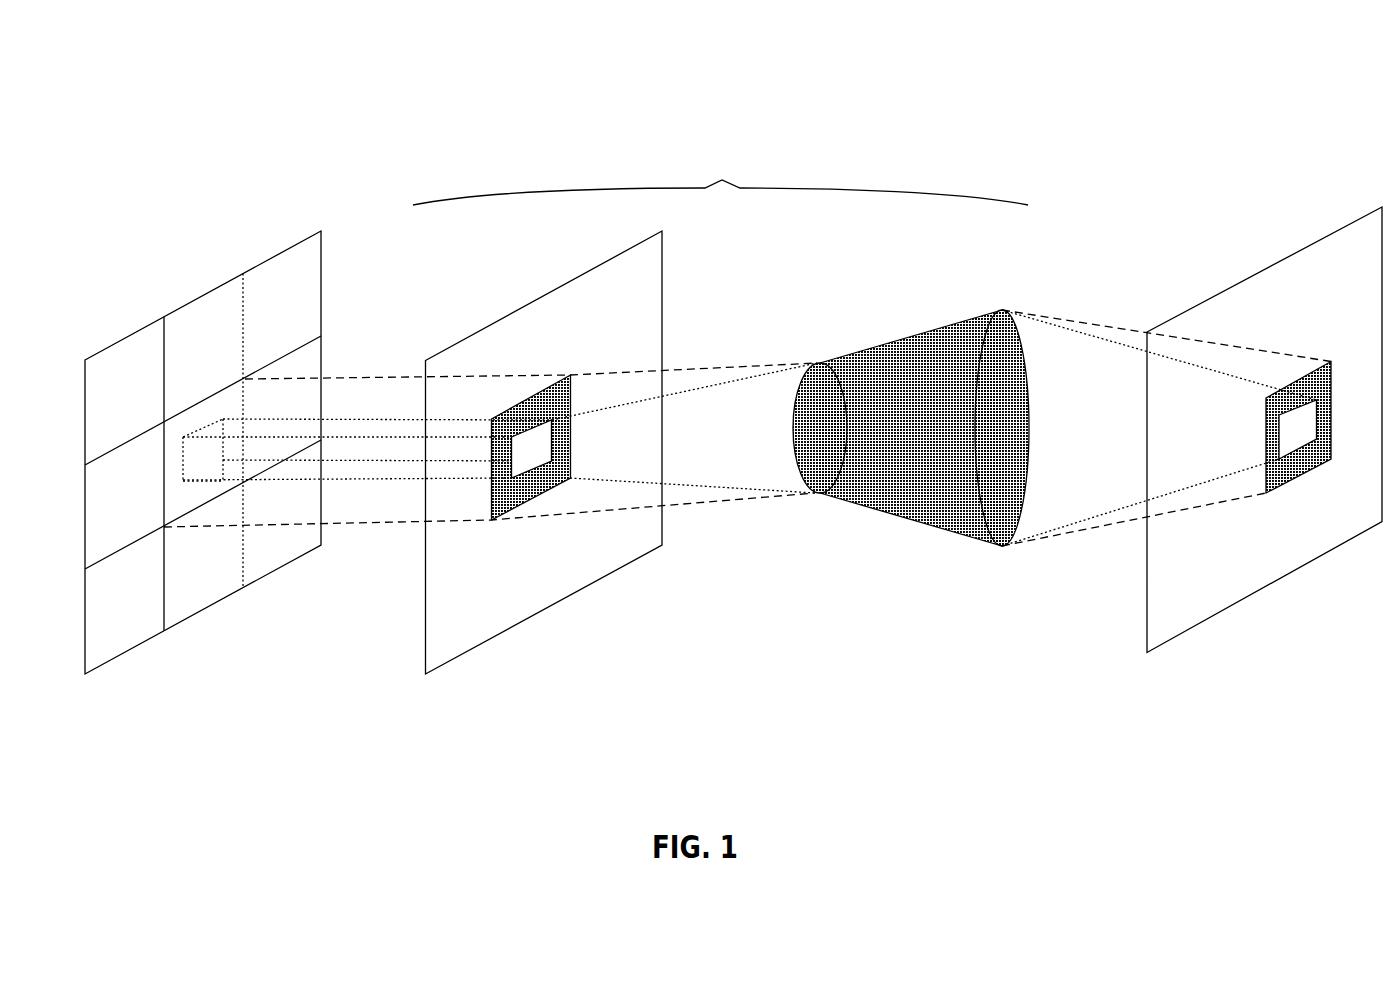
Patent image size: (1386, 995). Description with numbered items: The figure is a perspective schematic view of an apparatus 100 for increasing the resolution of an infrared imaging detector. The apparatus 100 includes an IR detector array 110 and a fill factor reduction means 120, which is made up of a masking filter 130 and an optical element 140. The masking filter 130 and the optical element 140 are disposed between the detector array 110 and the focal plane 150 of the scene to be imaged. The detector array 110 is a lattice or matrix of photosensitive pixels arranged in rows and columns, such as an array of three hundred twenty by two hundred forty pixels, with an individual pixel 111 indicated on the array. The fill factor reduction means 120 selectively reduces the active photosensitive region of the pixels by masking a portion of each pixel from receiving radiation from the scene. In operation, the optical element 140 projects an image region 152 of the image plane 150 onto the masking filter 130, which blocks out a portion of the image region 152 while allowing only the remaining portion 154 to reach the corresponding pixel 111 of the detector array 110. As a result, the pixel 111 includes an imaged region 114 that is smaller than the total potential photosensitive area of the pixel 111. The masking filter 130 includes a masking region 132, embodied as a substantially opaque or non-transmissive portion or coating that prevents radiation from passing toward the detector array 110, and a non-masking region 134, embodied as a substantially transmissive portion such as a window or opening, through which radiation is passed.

The apparatus 100 is at (190, 112).
The IR detector array 110 is at (203, 452).
The pixel 111 is at (208, 398).
The imaged region 114 is at (183, 470).
The fill factor reduction means 120 is at (721, 408).
The masking filter 130 is at (544, 452).
The masking region 132 is at (563, 431).
The non-masking region 134 is at (572, 434).
The optical element 140 is at (908, 519).
The focal plane 150 is at (1264, 430).
The image region 152 is at (1321, 442).
The remaining portion 154 is at (1308, 420).